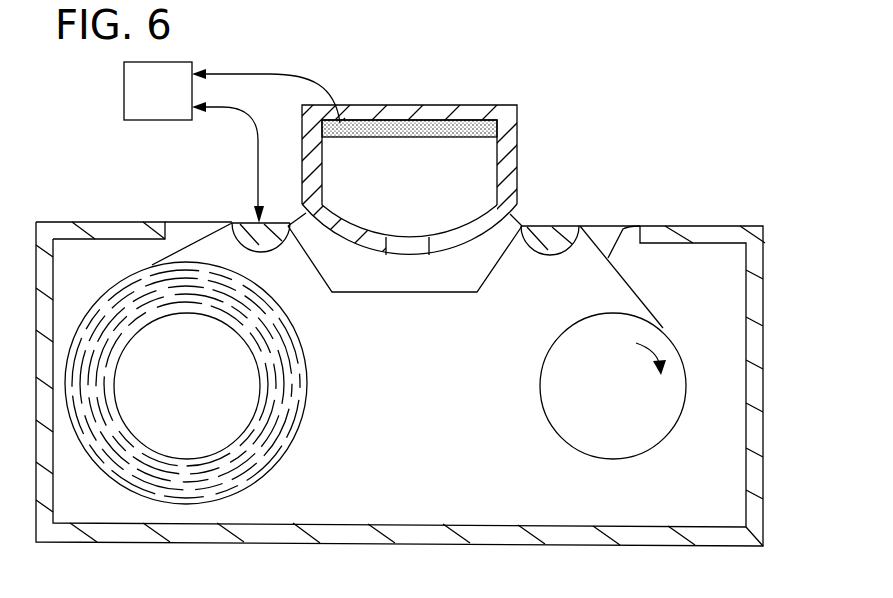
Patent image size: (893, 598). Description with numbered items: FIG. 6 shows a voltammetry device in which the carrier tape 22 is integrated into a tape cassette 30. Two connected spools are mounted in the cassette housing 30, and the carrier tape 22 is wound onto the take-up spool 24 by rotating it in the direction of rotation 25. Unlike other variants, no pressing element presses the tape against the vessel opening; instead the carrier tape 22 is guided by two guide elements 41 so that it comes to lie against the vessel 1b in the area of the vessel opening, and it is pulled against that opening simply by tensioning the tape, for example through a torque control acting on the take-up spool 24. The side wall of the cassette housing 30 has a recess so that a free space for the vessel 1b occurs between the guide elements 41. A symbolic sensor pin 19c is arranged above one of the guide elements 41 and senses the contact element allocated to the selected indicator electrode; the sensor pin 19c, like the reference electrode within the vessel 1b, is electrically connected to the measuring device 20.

The vessel 1b is at (506, 126).
The sensor pin 19c is at (258, 161).
The measuring device 20 is at (232, 92).
The carrier tape 22 is at (628, 226).
The take-up spool 24 is at (642, 398).
The direction of rotation 25 is at (637, 360).
The tape cassette 30 is at (715, 233).
The guide elements 41 is at (237, 221).